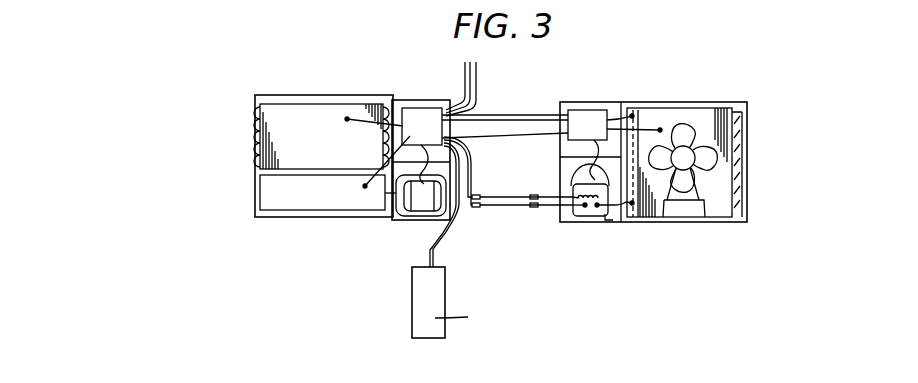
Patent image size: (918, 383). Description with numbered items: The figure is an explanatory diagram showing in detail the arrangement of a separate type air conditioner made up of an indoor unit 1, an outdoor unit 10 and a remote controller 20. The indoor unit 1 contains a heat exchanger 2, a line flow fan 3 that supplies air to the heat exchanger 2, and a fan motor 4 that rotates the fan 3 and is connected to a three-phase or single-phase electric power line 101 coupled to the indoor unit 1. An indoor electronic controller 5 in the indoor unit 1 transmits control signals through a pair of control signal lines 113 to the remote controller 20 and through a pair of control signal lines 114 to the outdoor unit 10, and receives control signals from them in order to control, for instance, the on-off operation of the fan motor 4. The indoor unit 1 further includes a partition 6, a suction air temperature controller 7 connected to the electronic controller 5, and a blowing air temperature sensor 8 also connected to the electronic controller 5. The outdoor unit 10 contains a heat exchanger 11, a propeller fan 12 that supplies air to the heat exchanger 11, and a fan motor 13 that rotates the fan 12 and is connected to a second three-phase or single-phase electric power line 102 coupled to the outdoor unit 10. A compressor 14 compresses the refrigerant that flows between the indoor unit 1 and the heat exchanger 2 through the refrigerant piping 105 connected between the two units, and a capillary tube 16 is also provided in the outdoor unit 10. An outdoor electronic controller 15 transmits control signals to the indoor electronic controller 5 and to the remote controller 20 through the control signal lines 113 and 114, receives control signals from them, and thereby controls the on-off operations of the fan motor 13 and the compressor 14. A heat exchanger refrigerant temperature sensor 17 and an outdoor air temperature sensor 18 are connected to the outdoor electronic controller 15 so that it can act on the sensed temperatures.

The indoor unit 1 is at (327, 95).
The heat exchanger 2 is at (273, 130).
The line flow fan 3 is at (293, 202).
The fan motor 4 is at (415, 203).
The indoor electronic controller 5 is at (417, 113).
The partition 6 is at (393, 100).
The suction air temperature controller 7 is at (347, 119).
The blowing air temperature sensor 8 is at (365, 186).
The outdoor unit 10 is at (678, 103).
The heat exchanger 11 is at (710, 117).
The propeller fan 12 is at (713, 163).
The fan motor 13 is at (685, 168).
The compressor 14 is at (593, 214).
The outdoor electronic controller 15 is at (583, 118).
The capillary tube 16 is at (578, 204).
The heat exchanger refrigerant temperature sensor 17 is at (632, 115).
The outdoor air temperature sensor 18 is at (660, 130).
The remote controller 20 is at (447, 295).
The electric power line 101 is at (478, 68).
The electric power line 102 is at (507, 114).
The refrigerant piping 105 is at (514, 207).
The pair of control signal lines 113 is at (472, 158).
The pair of control signal lines 114 is at (500, 138).